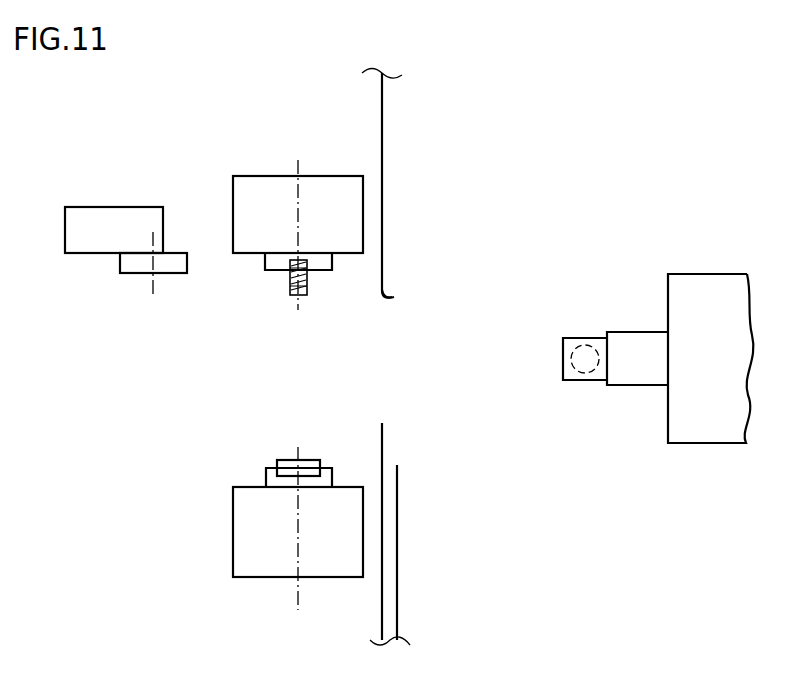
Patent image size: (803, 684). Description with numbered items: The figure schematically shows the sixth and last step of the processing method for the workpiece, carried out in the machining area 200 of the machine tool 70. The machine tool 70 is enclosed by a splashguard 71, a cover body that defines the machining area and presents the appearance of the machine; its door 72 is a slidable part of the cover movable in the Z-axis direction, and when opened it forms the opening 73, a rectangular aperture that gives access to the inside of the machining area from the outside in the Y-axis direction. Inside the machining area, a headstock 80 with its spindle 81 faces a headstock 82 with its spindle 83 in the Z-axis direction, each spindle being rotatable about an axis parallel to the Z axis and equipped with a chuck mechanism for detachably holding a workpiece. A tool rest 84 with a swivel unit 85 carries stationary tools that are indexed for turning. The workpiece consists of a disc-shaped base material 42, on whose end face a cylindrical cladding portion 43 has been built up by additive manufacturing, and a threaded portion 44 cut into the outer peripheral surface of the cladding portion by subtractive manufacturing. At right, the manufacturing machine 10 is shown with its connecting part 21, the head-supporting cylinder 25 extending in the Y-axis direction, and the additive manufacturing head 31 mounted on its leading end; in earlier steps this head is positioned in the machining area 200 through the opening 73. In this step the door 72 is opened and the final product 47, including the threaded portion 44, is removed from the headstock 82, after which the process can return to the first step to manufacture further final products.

The manufacturing machine 10 is at (724, 271).
The connecting part 21 is at (710, 428).
The head-supporting cylinder 25 is at (638, 340).
The additive manufacturing head 31 is at (585, 338).
The base material 42 is at (311, 465).
The cladding portion 43 is at (294, 292).
The threaded portion 44 is at (292, 282).
The final product 47 is at (306, 283).
The machine tool 70 is at (410, 102).
The splashguard 71 is at (384, 153).
The door 72 is at (399, 555).
The opening 73 is at (394, 297).
The headstock 80 is at (232, 545).
The spindle 81 is at (268, 480).
The headstock 82 is at (259, 175).
The spindle 83 is at (270, 260).
The tool rest 84 is at (70, 206).
The swivel unit 85 is at (136, 266).
The machining area 200 is at (200, 142).